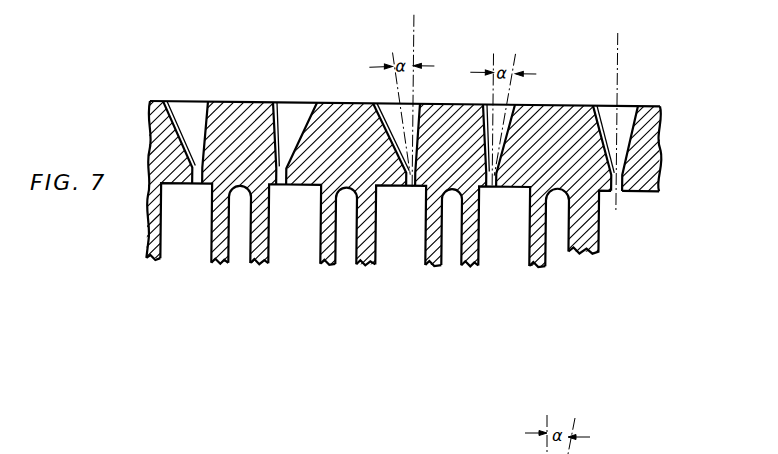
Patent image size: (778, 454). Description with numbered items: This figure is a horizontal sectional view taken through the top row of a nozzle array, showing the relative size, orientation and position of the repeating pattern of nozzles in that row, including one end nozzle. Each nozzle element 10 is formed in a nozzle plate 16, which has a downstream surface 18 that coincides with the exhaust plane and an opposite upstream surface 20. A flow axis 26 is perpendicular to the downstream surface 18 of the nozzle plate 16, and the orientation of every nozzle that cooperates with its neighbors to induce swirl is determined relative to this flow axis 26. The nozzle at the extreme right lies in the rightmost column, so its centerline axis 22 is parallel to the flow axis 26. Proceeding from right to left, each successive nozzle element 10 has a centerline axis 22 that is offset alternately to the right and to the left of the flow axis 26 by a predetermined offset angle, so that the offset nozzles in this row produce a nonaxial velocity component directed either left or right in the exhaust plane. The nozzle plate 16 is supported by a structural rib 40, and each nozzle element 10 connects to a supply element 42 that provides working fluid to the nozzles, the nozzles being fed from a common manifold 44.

The nozzle element 10 is at (186, 96).
The nozzle plate 16 is at (651, 147).
The downstream surface 18 is at (256, 101).
The upstream surface 20 is at (152, 199).
The centerline axis 22 is at (619, 46).
The flow axis 26 is at (415, 20).
The structural rib 40 is at (602, 228).
The supply element 42 is at (201, 218).
The common manifold 44 is at (241, 240).